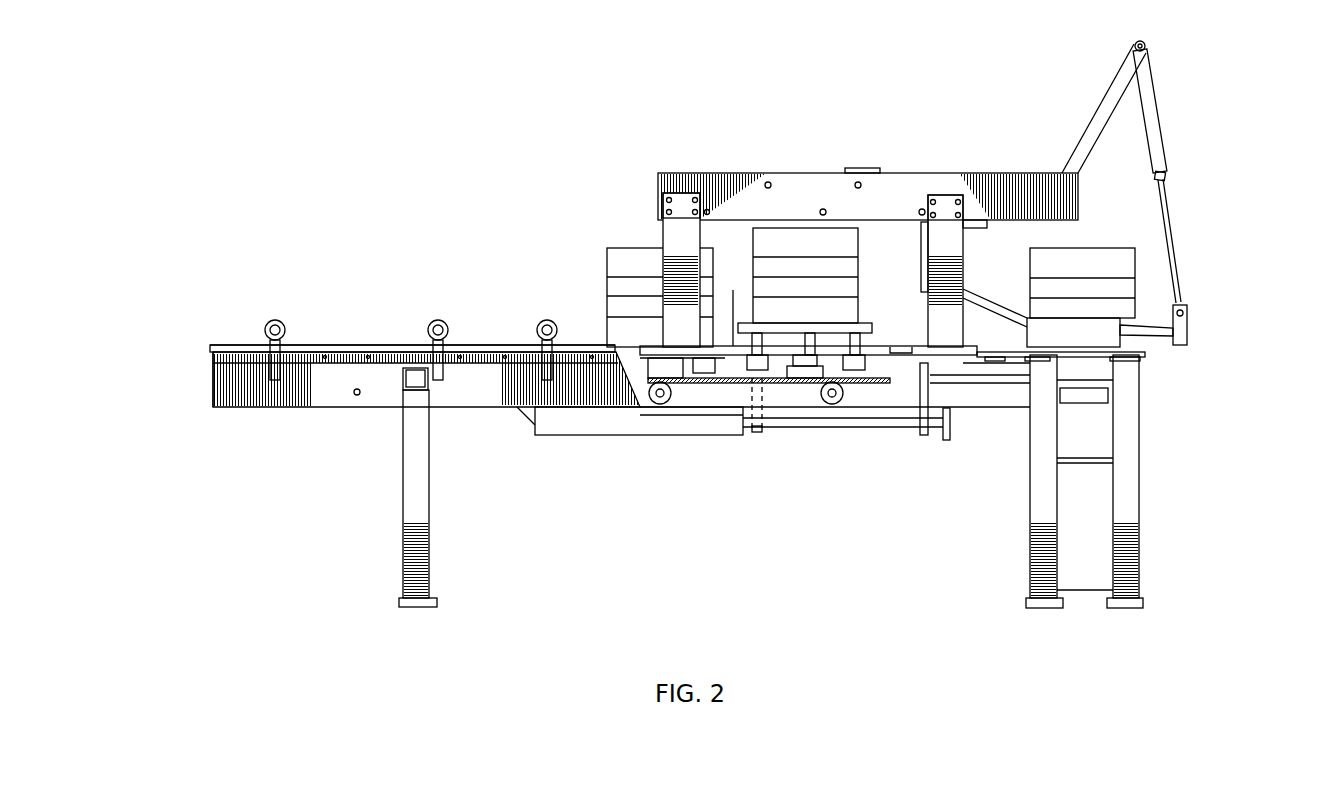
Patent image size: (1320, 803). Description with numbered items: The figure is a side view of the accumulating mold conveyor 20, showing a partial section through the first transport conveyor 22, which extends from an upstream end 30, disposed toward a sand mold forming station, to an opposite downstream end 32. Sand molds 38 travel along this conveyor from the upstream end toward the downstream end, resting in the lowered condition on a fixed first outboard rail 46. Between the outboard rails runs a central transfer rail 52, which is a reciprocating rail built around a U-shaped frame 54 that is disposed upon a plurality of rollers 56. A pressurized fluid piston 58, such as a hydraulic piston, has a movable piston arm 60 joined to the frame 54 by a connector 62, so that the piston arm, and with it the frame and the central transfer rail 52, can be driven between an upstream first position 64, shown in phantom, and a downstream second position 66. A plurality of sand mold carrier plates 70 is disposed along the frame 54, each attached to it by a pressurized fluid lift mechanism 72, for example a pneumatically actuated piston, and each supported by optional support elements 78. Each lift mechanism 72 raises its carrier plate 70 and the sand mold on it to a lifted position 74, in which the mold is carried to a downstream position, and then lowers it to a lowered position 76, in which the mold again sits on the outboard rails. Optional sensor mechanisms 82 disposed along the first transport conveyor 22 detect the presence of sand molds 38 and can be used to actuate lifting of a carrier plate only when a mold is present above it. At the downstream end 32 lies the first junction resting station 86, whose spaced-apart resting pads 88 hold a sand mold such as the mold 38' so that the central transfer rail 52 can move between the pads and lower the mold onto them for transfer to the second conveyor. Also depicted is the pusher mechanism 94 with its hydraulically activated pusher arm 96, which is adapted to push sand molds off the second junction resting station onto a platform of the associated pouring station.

The accumulating mold conveyor 20 is at (403, 183).
The first transport conveyor 22 is at (308, 407).
The upstream end 30 is at (240, 350).
The downstream end 32 is at (1027, 410).
The sand mold 38 is at (805, 206).
The sand mold 38' is at (1148, 273).
The first outboard rail 46 is at (238, 360).
The central transfer rail 52 is at (648, 353).
The U-shaped frame 54 is at (888, 387).
The rollers 56 is at (645, 405).
The pressurized fluid piston 58 is at (650, 436).
The piston arm 60 is at (787, 430).
The connector 62 is at (950, 410).
The upstream first position 64 is at (762, 440).
The downstream second position 66 is at (920, 450).
The sand mold carrier plate 70 is at (873, 335).
The pressurized fluid lift mechanism 72 is at (670, 367).
The lifted position 74 is at (862, 325).
The lowered position 76 is at (720, 345).
The support elements 78 is at (702, 362).
The sensor mechanisms 82 is at (446, 332).
The first junction resting station 86 is at (1148, 352).
The resting pads 88 is at (1045, 347).
The pusher mechanism 94 is at (1003, 172).
The pusher arm 96 is at (1185, 330).